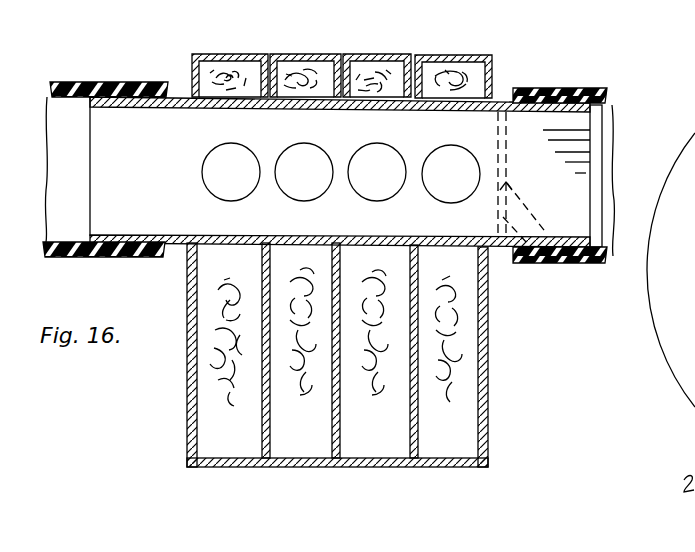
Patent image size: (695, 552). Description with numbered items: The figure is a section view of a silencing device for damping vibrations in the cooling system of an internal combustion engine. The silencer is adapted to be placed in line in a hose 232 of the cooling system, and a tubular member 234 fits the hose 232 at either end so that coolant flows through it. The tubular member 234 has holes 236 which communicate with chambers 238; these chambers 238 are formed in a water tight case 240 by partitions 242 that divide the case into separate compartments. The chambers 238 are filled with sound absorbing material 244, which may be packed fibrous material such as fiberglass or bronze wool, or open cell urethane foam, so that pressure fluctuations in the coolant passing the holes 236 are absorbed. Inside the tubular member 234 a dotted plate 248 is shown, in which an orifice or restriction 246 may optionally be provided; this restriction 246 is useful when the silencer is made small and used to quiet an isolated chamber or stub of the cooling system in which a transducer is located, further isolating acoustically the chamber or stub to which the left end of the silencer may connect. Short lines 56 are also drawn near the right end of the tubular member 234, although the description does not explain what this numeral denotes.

The heat exchange plates/fins 56 is at (563, 148).
The hose 232 is at (70, 90).
The tubular member 234 is at (590, 117).
The holes 236 is at (302, 199).
The chambers 238 is at (440, 435).
The water tight case 240 is at (488, 396).
The partitions 242 is at (406, 66).
The packing material 244 is at (444, 338).
The orifice or restriction 246 is at (568, 258).
The dotted plate 248 is at (520, 203).